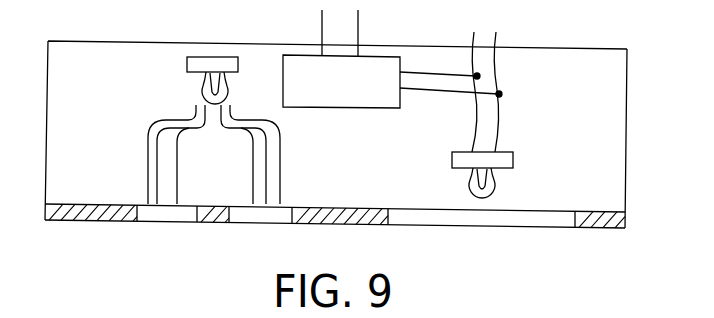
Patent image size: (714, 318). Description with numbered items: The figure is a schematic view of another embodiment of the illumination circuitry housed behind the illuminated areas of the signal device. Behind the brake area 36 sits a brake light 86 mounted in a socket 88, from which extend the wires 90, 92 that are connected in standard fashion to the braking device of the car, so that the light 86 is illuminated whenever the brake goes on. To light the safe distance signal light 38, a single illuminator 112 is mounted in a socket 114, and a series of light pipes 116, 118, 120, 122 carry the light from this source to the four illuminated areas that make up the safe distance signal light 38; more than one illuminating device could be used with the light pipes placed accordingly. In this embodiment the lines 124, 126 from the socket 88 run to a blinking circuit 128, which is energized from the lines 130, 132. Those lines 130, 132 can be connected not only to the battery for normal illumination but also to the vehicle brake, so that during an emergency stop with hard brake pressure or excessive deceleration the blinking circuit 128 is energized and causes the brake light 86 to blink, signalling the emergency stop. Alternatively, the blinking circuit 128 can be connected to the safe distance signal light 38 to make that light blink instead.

The brake area 36 is at (475, 228).
The safe distance signal light 38 is at (199, 234).
The brake light 86 is at (496, 181).
The socket 88 is at (512, 152).
The wire 90 is at (500, 39).
The wire 92 is at (476, 38).
The illuminator 112 is at (198, 91).
The socket 114 is at (192, 57).
The light pipe 116 is at (281, 147).
The light pipe 118 is at (263, 172).
The light pipe 120 is at (173, 163).
The light pipe 122 is at (148, 155).
The line 124 is at (421, 70).
The line 126 is at (436, 94).
The blinking circuit 128 is at (349, 109).
The line 130 is at (322, 22).
The line 132 is at (358, 24).